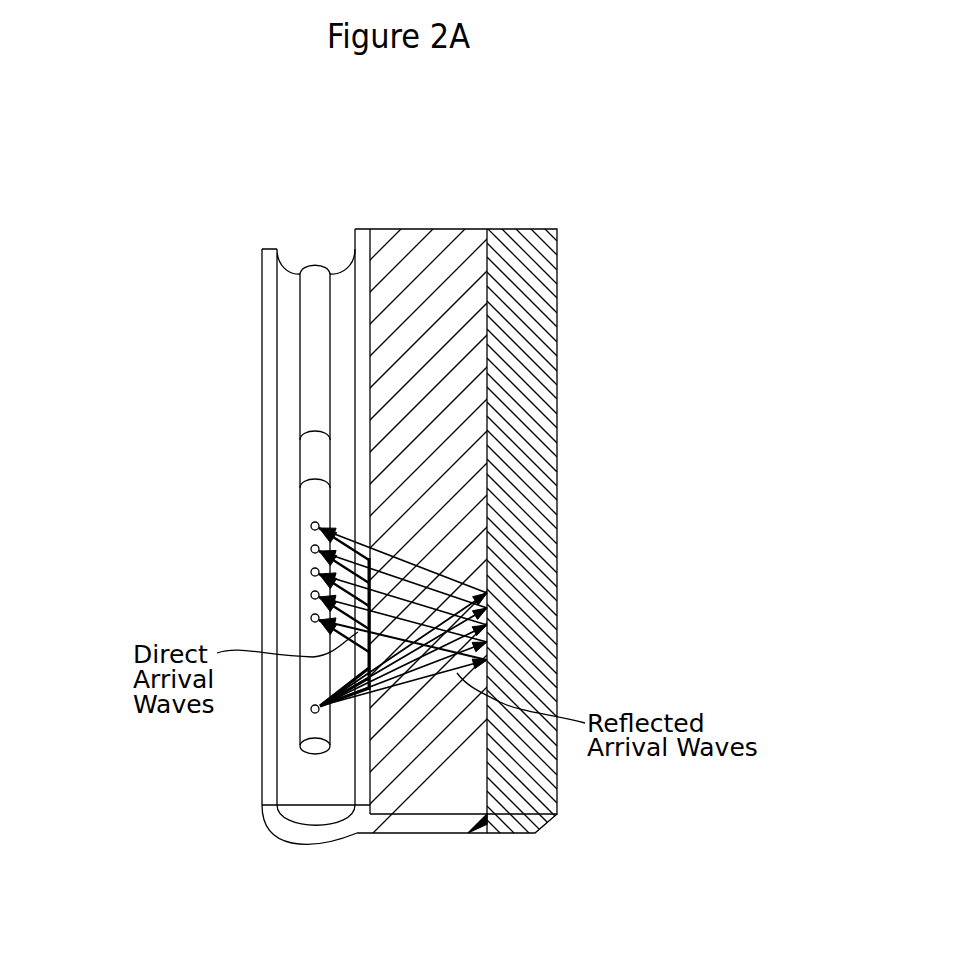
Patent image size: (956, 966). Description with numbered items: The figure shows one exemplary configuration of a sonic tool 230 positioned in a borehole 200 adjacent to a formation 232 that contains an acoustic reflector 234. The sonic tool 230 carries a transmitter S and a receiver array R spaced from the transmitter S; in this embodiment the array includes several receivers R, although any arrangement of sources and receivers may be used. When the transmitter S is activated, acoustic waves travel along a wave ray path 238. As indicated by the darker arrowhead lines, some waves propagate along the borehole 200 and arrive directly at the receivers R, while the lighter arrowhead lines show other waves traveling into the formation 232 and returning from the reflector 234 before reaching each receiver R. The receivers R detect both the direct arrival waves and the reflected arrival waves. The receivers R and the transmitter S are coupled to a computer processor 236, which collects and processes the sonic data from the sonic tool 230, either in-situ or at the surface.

The borehole 200 is at (261, 283).
The sonic tool 230 is at (294, 496).
The formation 232 is at (538, 291).
The acoustic reflector 234 is at (486, 258).
The computer processor 236 is at (312, 456).
The wave ray path 238 is at (360, 698).
The receiver array R is at (310, 618).
The transmitter S is at (310, 710).